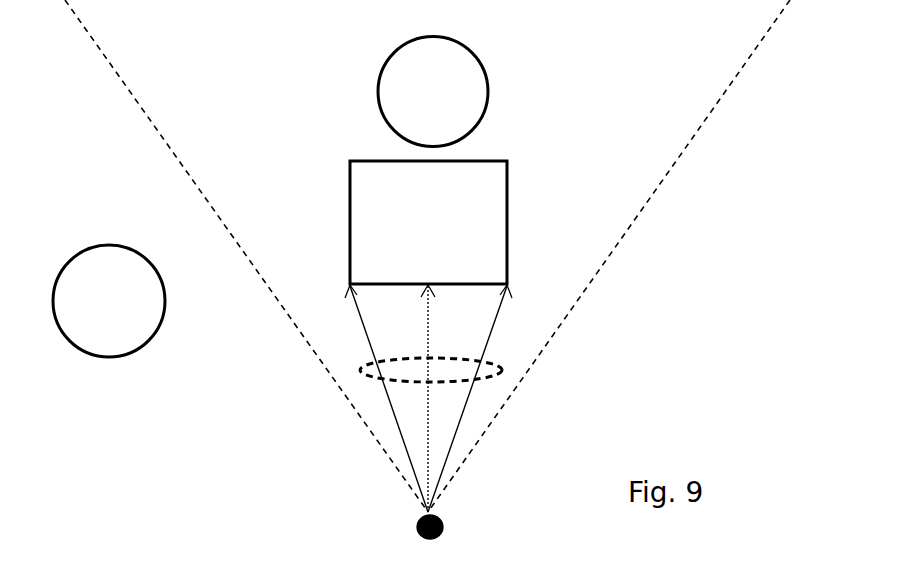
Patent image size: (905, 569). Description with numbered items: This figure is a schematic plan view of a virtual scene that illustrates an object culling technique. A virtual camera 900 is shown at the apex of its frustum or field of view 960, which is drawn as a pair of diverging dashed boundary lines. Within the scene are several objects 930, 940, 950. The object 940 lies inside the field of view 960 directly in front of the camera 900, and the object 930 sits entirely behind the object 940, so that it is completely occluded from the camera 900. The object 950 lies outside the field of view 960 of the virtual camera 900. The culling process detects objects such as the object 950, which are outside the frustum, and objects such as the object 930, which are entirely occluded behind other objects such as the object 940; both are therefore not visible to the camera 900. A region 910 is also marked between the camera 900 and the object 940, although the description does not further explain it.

The virtual camera 900 is at (417, 525).
The dashed ellipse (measurement region) 910 is at (482, 382).
The object 930 is at (377, 73).
The object 940 is at (348, 187).
The object 950 is at (128, 355).
The field of view 960 is at (230, 233).